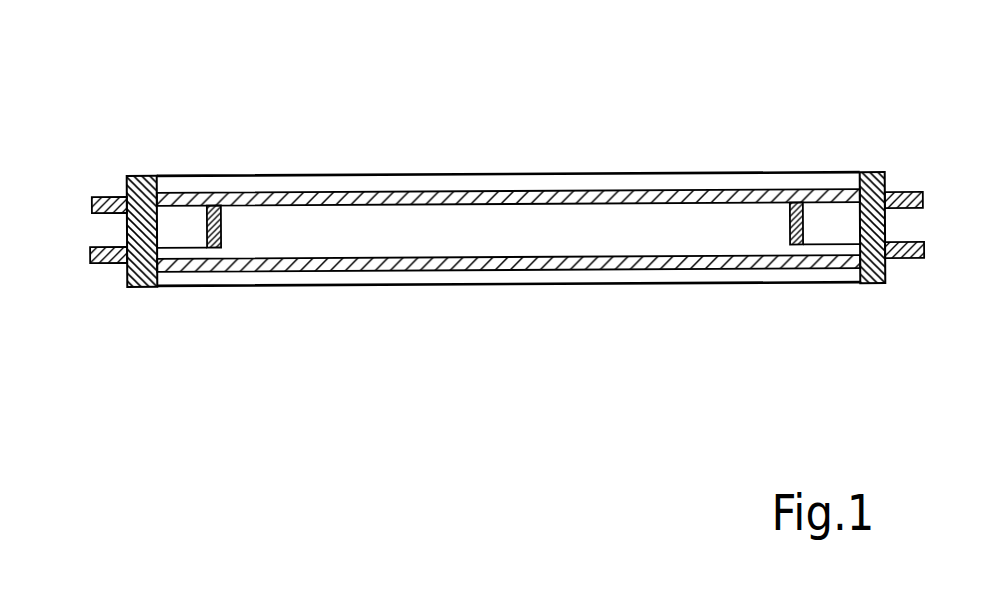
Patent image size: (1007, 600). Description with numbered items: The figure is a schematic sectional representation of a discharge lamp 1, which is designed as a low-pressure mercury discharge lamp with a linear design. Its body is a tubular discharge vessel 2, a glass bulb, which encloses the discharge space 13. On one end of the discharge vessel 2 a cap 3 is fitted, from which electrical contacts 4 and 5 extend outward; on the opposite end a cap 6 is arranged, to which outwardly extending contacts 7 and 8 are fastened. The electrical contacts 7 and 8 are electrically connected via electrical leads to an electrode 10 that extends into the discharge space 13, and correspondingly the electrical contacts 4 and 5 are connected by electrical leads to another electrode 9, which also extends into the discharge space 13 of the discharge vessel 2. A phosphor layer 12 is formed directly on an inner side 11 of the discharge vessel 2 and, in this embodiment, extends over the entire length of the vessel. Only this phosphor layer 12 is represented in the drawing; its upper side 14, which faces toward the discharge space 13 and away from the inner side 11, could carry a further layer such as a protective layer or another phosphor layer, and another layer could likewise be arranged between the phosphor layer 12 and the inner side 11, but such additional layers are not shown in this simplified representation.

The discharge lamp 1 is at (540, 76).
The discharge vessel 2 is at (178, 184).
The cap 3 is at (143, 176).
The electrical contact 4 is at (92, 261).
The electrical contact 5 is at (92, 194).
The cap 6 is at (875, 283).
The electrical contact 7 is at (903, 188).
The electrical contact 8 is at (921, 243).
The electrode 9 is at (236, 246).
The electrode 10 is at (769, 211).
The inner side 11 is at (453, 196).
The phosphor layer 12 is at (497, 272).
The discharge space 13 is at (537, 230).
The upper side 14 is at (643, 258).